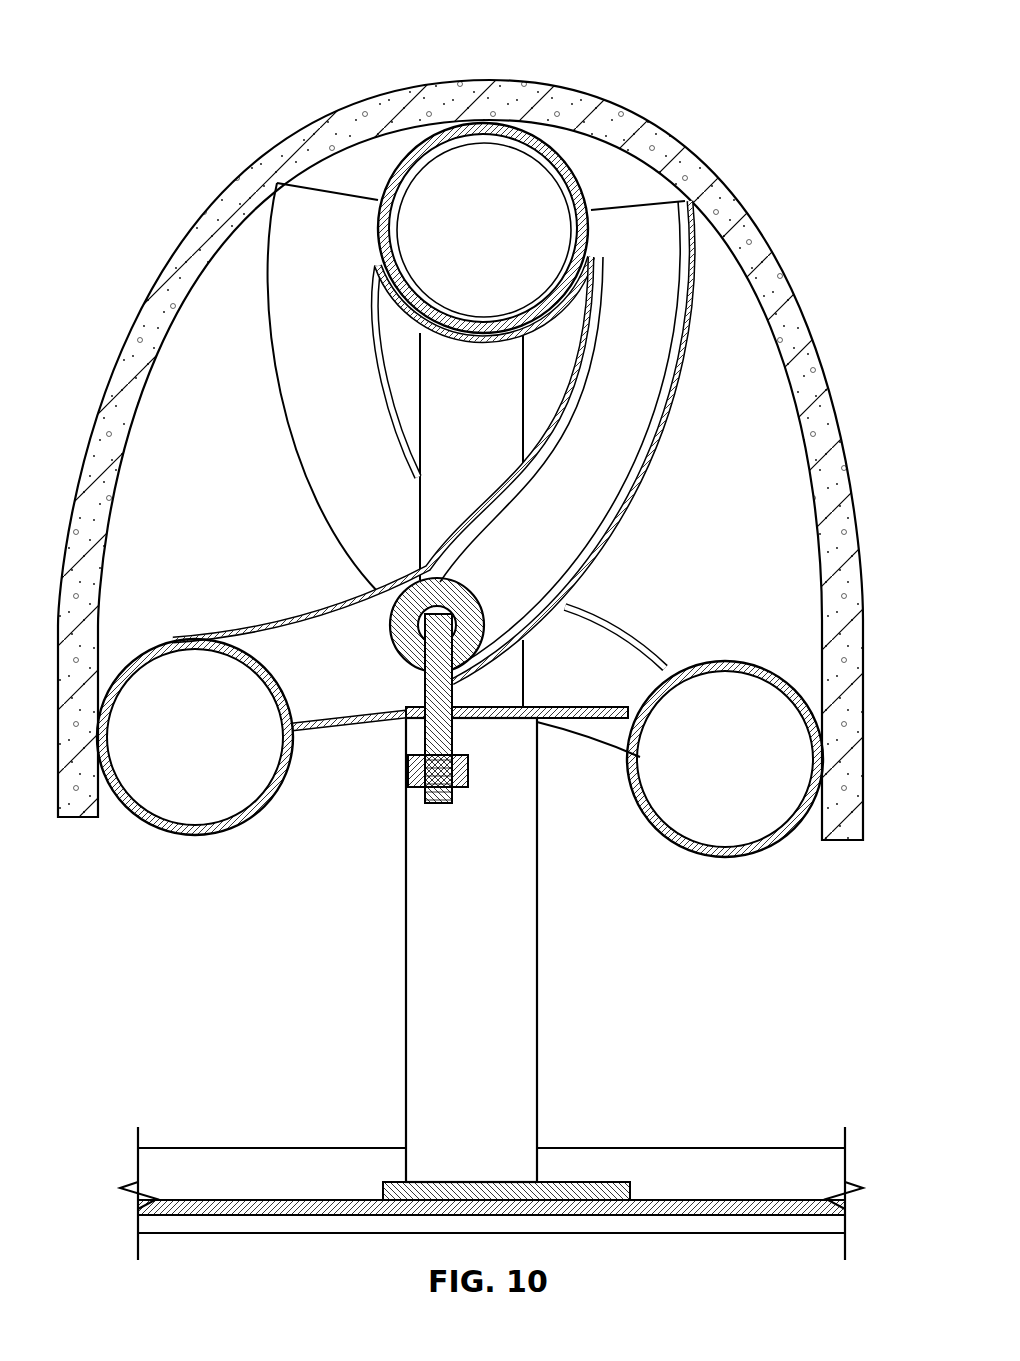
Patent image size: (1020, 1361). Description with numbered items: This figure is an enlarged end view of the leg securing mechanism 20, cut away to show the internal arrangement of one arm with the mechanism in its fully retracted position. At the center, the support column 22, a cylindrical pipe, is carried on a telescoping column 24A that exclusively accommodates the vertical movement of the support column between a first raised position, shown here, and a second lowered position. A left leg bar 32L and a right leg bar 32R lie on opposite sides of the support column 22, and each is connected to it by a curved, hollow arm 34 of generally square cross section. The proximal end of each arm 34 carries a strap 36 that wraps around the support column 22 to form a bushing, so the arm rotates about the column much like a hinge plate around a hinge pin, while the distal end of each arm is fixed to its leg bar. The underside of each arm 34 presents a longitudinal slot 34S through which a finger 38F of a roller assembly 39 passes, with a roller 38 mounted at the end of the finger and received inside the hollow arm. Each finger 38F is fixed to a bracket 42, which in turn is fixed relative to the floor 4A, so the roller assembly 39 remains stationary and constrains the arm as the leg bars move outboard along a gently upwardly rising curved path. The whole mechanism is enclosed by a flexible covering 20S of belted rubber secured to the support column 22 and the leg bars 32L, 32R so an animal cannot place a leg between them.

The leg securing mechanism 20 is at (622, 65).
The flexible covering 20S is at (346, 107).
The support column 22 is at (418, 290).
The telescoping column 24A is at (492, 991).
The left leg bar 32L is at (173, 638).
The right leg bar 32R is at (752, 662).
The arm 34 is at (350, 376).
The longitudinal slot 34S is at (641, 500).
The strap 36 is at (545, 128).
The roller 38 is at (481, 606).
The finger 38F is at (430, 735).
The roller assembly 39 is at (386, 740).
The bracket 42 is at (505, 720).
The floor 4A is at (660, 1195).